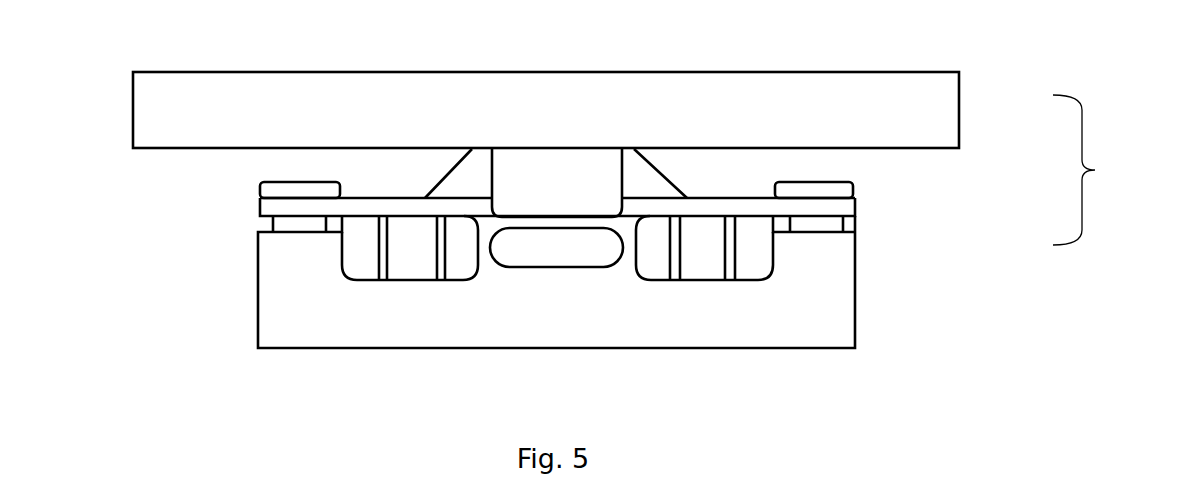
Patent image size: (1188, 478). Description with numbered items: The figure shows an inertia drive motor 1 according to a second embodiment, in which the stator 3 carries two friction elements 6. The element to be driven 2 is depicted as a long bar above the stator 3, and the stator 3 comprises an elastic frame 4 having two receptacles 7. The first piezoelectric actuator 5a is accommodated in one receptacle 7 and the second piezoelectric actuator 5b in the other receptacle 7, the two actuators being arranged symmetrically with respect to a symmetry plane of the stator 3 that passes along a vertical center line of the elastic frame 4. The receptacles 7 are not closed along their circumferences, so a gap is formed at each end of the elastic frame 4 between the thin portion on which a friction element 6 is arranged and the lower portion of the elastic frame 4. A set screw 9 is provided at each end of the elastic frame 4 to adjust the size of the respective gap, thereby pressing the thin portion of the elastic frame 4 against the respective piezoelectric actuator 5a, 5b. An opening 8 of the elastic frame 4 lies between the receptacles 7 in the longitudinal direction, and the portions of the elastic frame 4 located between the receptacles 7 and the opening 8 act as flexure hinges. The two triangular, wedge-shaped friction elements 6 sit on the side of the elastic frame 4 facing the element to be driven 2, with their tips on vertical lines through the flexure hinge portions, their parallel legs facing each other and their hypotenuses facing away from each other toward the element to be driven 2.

The inertia drive motor 1 is at (1098, 170).
The element to be driven 2 is at (878, 132).
The stator 3 is at (928, 261).
The elastic frame 4 is at (823, 293).
The first piezoelectric actuator 5a is at (407, 272).
The second piezoelectric actuator 5b is at (693, 272).
The friction element 6 is at (467, 170).
The receptacle 7 is at (455, 262).
The opening 8 is at (530, 258).
The set screw 9 is at (267, 190).